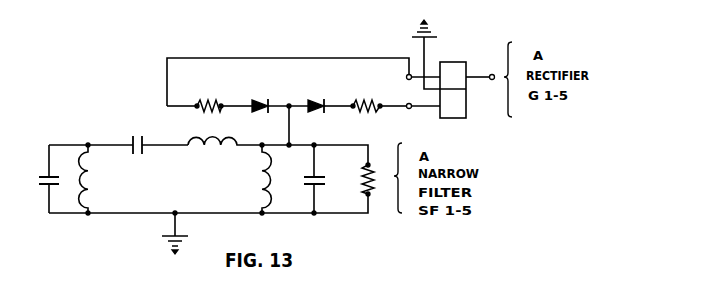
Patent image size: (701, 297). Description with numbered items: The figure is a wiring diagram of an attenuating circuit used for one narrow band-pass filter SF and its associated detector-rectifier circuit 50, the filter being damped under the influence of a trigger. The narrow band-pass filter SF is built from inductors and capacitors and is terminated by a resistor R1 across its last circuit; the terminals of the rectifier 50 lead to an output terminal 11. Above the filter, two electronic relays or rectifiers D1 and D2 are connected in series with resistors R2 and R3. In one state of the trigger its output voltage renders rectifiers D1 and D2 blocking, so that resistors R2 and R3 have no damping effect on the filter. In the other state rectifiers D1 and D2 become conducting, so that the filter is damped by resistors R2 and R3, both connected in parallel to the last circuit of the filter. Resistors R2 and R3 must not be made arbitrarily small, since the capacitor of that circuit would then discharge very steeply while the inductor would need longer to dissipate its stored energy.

The output terminal 11 is at (484, 68).
The rectifier 50 is at (439, 80).
The resistor R1 is at (371, 191).
The resistor R2 is at (195, 84).
The resistor R3 is at (354, 84).
The rectifier D1 is at (251, 84).
The rectifier D2 is at (307, 84).
The narrow band-pass filter SF is at (203, 195).